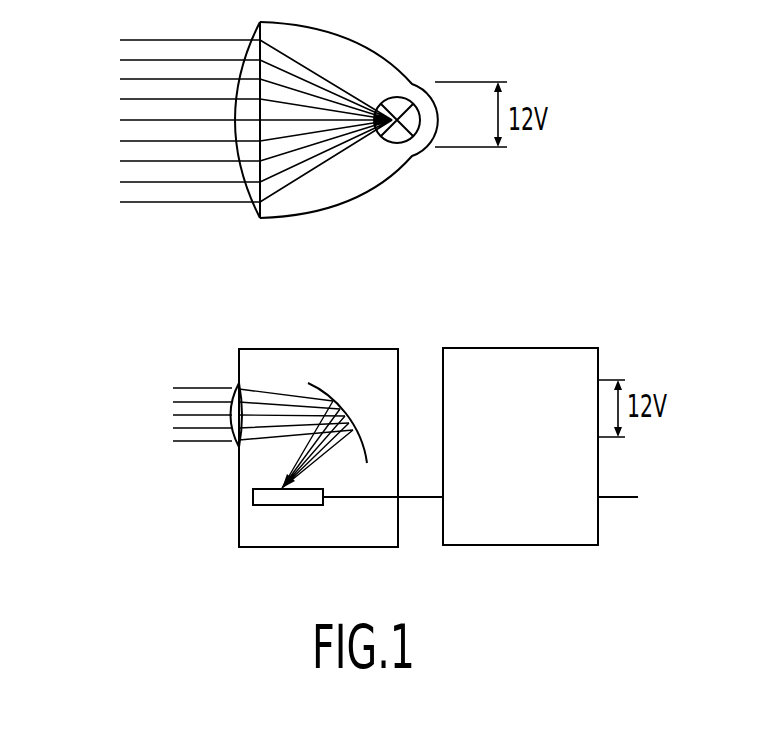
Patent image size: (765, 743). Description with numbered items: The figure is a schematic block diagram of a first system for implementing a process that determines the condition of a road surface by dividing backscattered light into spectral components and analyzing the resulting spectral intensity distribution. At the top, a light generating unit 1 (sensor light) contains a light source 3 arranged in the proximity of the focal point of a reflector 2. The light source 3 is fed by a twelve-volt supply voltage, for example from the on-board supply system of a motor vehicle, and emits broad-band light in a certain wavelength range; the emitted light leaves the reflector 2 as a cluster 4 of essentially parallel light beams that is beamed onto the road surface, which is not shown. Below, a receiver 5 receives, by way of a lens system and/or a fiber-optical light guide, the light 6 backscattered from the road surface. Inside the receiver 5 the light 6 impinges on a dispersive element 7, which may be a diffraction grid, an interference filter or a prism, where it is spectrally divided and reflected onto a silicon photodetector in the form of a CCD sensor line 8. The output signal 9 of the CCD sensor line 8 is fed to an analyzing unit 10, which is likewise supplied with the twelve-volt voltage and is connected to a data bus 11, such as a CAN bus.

The light generating unit 1 is at (401, 192).
The reflector 2 is at (329, 198).
The light source 3 is at (413, 97).
The cluster of essentially parallel light beams 4 is at (203, 225).
The receiver 5 is at (301, 335).
The backscattered light 6 is at (202, 463).
The dispersive element 7 is at (340, 403).
The CCD sensor line 8 is at (282, 505).
The output signal 9 is at (417, 497).
The analyzing unit 10 is at (527, 547).
The data bus 11 is at (630, 498).